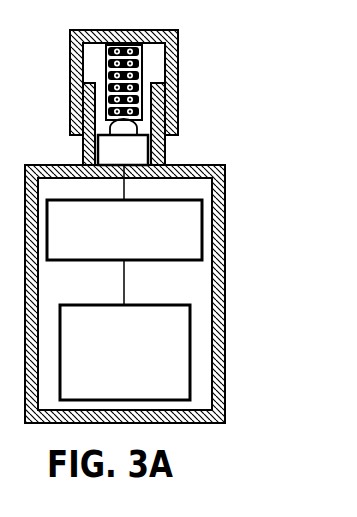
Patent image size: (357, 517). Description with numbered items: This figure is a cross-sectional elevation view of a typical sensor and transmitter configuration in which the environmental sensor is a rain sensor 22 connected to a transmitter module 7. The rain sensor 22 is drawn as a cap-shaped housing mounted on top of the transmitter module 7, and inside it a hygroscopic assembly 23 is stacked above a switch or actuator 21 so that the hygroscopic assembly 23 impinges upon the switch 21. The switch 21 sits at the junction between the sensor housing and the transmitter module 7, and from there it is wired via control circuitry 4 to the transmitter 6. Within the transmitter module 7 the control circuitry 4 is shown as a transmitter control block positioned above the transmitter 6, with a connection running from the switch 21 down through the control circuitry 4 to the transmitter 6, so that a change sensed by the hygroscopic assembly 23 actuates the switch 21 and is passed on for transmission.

The control circuitry 4 is at (202, 212).
The transmitter 6 is at (191, 375).
The transmitter module 7 is at (242, 284).
The switch or actuator 21 is at (140, 145).
The rain sensor 22 is at (183, 78).
The hygroscopic assembly 23 is at (122, 78).